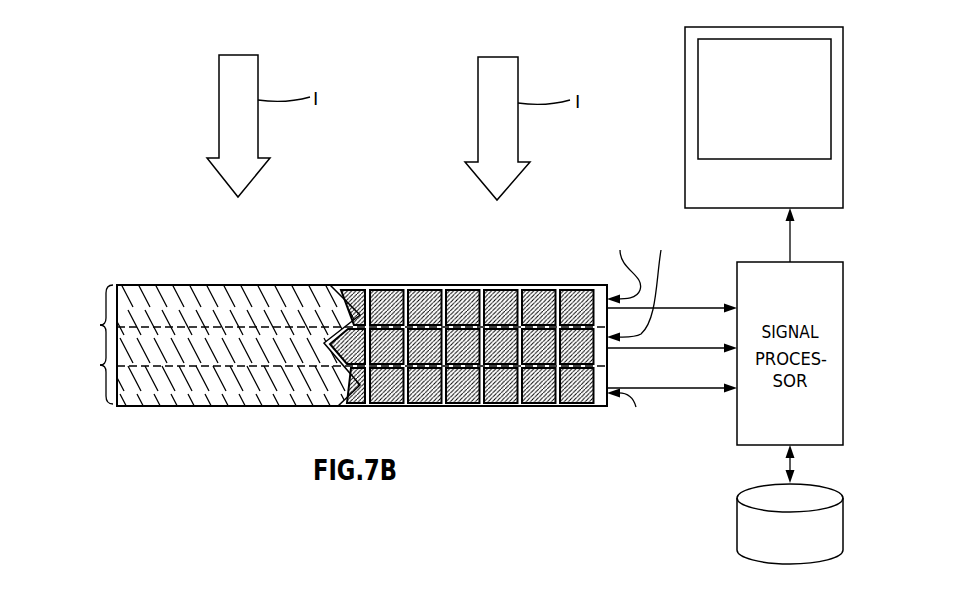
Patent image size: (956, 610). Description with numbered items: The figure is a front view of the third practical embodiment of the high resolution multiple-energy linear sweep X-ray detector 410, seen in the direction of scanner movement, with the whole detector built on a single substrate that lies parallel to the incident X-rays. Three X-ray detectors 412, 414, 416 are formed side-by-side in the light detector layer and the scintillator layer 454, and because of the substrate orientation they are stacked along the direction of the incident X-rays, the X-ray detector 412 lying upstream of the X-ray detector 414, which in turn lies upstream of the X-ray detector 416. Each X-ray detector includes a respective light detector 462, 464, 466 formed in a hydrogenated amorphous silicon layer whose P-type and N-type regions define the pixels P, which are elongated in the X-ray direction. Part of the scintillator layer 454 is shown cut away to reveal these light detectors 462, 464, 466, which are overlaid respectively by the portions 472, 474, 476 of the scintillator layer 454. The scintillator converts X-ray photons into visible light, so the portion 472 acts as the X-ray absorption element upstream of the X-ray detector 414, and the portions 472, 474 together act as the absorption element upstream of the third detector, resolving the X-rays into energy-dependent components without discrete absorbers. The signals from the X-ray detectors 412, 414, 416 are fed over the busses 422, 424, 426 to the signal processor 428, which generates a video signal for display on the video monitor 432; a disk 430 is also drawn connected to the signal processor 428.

The multiple-energy linear sweep X-ray detector 410 is at (236, 264).
The X-ray detector 412 is at (83, 309).
The X-ray detector 414 is at (83, 347).
The X-ray detector 416 is at (83, 386).
The portion of the scintillator layer 472 is at (104, 302).
The portion of the scintillator layer 474 is at (104, 341).
The portion of the scintillator layer 476 is at (104, 379).
The scintillator layer 454 is at (266, 292).
The pixels P is at (388, 298).
The bus 422 is at (707, 306).
The bus 424 is at (713, 346).
The bus 426 is at (717, 386).
The light detector 462 is at (624, 267).
The light detector 464 is at (643, 286).
The light detector 466 is at (632, 406).
The signal processor 428 is at (737, 445).
The disk 430 is at (737, 523).
The video monitor 432 is at (685, 117).